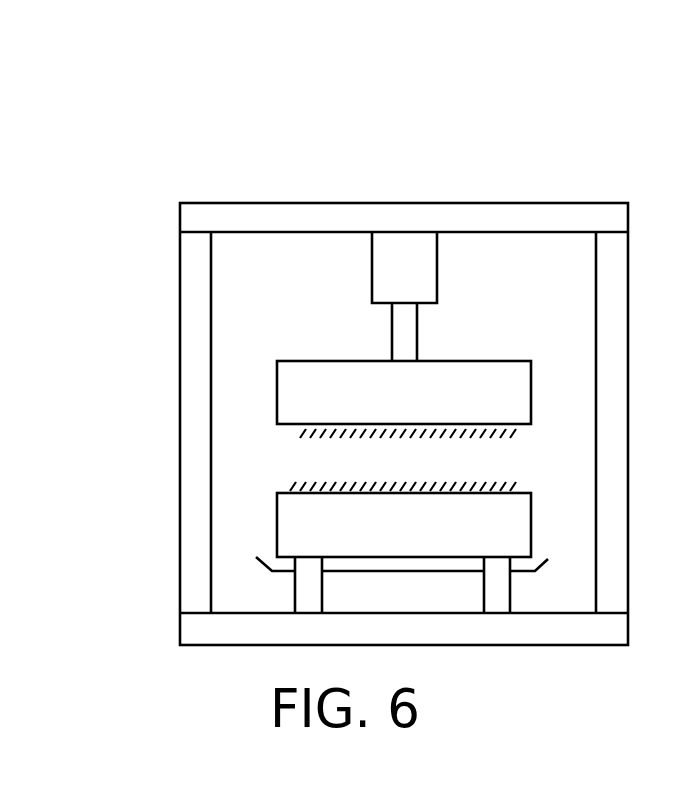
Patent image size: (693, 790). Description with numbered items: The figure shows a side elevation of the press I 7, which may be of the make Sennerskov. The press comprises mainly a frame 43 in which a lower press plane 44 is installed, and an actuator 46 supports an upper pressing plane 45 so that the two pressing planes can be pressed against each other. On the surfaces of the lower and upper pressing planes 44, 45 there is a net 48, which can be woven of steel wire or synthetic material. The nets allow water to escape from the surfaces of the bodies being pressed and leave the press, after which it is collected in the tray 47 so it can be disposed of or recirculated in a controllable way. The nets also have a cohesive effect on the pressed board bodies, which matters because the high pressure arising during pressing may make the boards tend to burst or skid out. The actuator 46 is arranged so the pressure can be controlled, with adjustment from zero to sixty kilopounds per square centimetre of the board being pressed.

The press I 7 is at (371, 121).
The frame 43 is at (202, 270).
The lower press plane 44 is at (302, 530).
The upper pressing plane 45 is at (302, 398).
The actuator 46 is at (400, 336).
The tray 47 is at (272, 571).
The net 48 is at (345, 487).